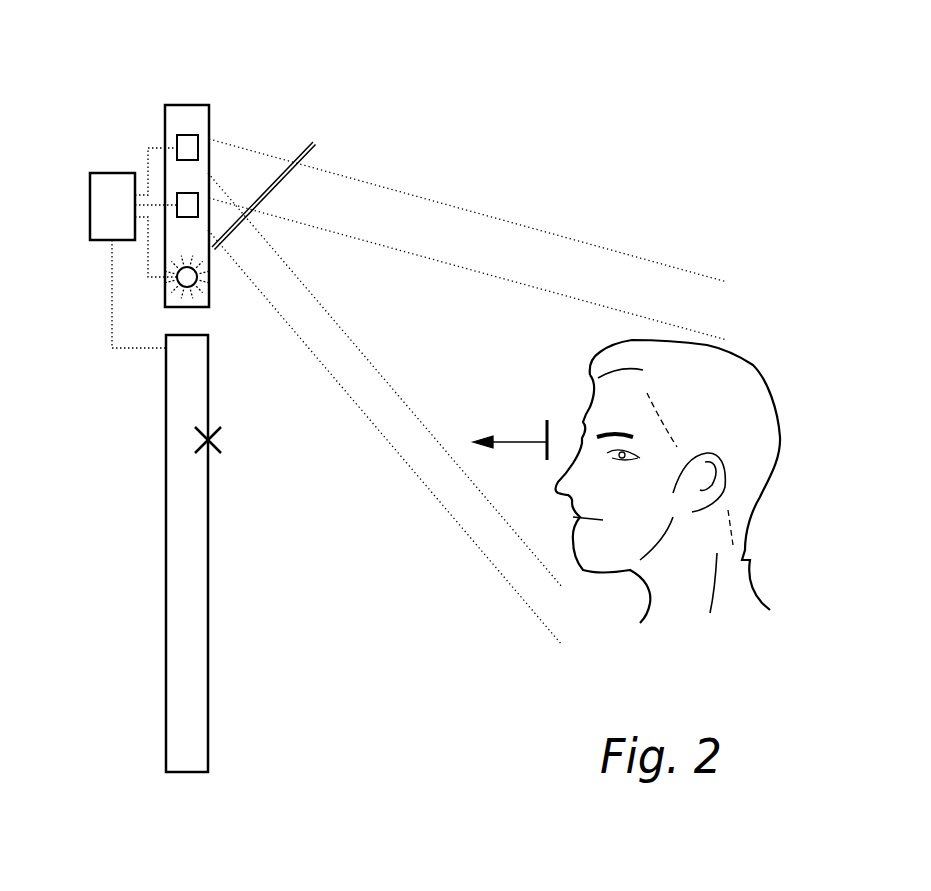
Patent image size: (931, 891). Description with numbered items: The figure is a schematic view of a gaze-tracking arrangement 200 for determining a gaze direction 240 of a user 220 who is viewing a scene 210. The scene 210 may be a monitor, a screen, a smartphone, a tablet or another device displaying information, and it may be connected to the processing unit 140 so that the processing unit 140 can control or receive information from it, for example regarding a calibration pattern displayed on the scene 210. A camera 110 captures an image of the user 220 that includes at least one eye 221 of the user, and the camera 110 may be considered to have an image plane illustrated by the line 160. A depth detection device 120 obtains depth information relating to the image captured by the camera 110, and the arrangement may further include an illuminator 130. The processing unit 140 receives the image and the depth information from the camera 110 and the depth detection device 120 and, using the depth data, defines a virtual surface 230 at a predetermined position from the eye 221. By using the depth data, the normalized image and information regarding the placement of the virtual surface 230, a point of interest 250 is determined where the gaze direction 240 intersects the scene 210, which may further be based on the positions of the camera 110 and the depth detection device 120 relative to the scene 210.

The camera 110 is at (208, 147).
The depth detection device 120 is at (187, 193).
The illuminator 130 is at (178, 282).
The processing unit 140 is at (113, 172).
The image plane line 160 is at (313, 145).
The system 200 is at (574, 192).
The scene 210 is at (165, 407).
The user 220 is at (727, 380).
The eye of the user 221 is at (568, 458).
The virtual surface 230 is at (548, 425).
The gaze direction 240 is at (510, 440).
The point of interest 250 is at (203, 441).